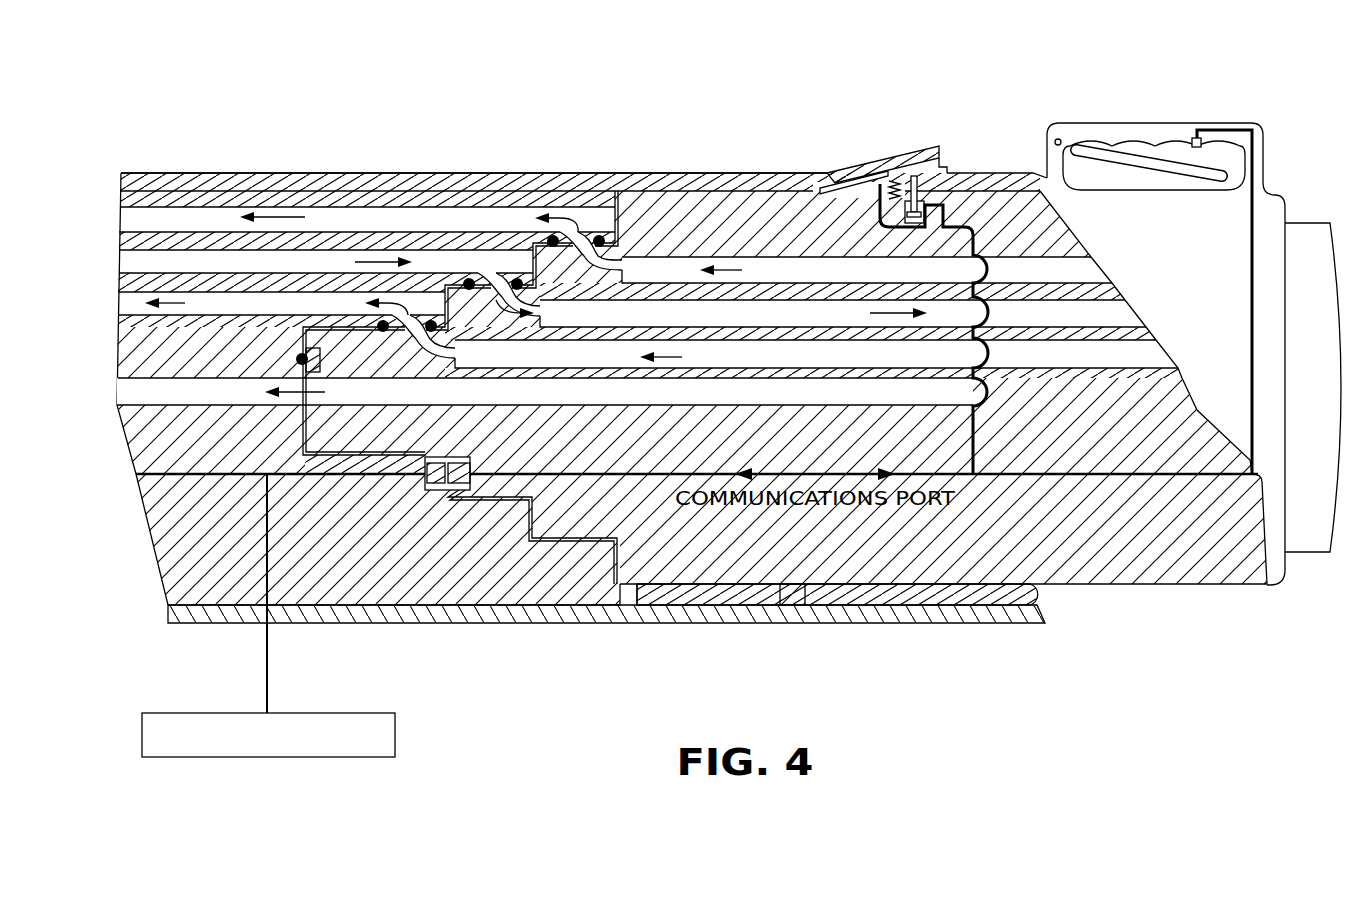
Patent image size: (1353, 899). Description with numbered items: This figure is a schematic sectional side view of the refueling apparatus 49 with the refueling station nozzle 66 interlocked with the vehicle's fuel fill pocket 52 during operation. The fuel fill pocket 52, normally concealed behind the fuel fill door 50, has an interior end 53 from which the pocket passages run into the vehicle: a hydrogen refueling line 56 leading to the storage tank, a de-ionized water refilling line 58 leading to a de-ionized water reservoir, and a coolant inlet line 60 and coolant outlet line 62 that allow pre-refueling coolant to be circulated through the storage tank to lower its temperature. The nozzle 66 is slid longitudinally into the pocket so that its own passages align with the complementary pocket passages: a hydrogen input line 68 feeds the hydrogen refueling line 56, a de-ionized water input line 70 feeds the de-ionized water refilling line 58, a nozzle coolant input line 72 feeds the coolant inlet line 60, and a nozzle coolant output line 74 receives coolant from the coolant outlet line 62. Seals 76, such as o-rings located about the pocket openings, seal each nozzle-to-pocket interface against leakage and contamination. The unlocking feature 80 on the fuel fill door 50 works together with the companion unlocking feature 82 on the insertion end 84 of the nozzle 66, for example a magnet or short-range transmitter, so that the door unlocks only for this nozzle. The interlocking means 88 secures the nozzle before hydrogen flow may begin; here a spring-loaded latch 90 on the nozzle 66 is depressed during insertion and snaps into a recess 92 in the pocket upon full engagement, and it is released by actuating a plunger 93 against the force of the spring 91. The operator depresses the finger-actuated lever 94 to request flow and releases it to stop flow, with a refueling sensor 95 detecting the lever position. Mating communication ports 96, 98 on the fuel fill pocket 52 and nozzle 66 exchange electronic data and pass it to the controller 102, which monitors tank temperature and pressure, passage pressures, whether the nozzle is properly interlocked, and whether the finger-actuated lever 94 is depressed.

The refueling apparatus 49 is at (580, 82).
The fuel fill door 50 is at (847, 606).
The fuel fill pocket 52 is at (703, 194).
The interior end 53 is at (160, 438).
The hydrogen refueling line 56 is at (128, 384).
The de-ionized water refilling line 58 is at (134, 293).
The coolant inlet line 60 is at (136, 208).
The coolant outlet line 62 is at (136, 253).
The nozzle 66 is at (742, 196).
The hydrogen input line 68 is at (1182, 384).
The de-ionized water input line 70 is at (1162, 346).
The nozzle coolant input line 72 is at (1088, 263).
The nozzle coolant output line 74 is at (1120, 305).
The seals 76 is at (516, 278).
The unlocking feature 80 is at (790, 606).
The companion unlocking feature 82 is at (301, 352).
The insertion end 84 is at (348, 445).
The interlocking means 88 is at (907, 136).
The spring-loaded latch 90 is at (850, 187).
The spring 91 is at (894, 186).
The recess 92 is at (916, 176).
The plunger 93 is at (920, 203).
The finger-actuated lever 94 is at (1141, 158).
The refueling sensor 95 is at (1196, 136).
The communication port 96 is at (437, 484).
The communication port 98 is at (462, 484).
The controller 102 is at (397, 735).